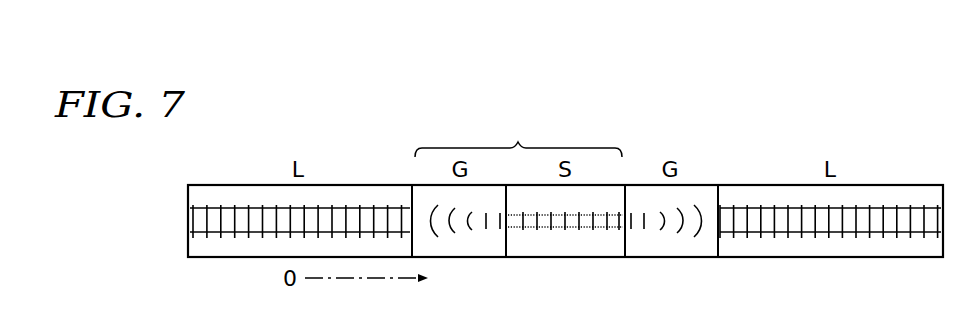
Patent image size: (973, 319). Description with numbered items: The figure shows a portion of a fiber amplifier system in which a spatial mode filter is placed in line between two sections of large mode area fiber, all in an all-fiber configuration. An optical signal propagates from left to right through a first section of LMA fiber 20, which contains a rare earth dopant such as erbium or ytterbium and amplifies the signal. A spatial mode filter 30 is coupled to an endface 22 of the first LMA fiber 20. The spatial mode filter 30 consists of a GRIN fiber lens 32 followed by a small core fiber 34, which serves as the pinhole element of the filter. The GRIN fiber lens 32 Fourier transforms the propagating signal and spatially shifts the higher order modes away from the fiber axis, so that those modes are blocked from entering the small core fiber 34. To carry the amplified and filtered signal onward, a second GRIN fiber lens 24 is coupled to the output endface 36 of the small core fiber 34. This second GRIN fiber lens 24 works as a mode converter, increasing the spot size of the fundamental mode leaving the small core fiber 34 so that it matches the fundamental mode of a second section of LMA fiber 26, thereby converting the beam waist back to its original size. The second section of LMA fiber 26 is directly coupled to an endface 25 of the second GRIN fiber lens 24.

The first section of LMA fiber 20 is at (252, 186).
The endface 22 is at (410, 193).
The second GRIN fiber lens 24 is at (673, 248).
The endface 25 is at (717, 197).
The second section of LMA fiber 26 is at (888, 185).
The spatial mode filter 30 is at (518, 131).
The GRIN fiber lens 32 is at (462, 248).
The small core fiber 34 is at (565, 248).
The output endface 36 is at (637, 197).